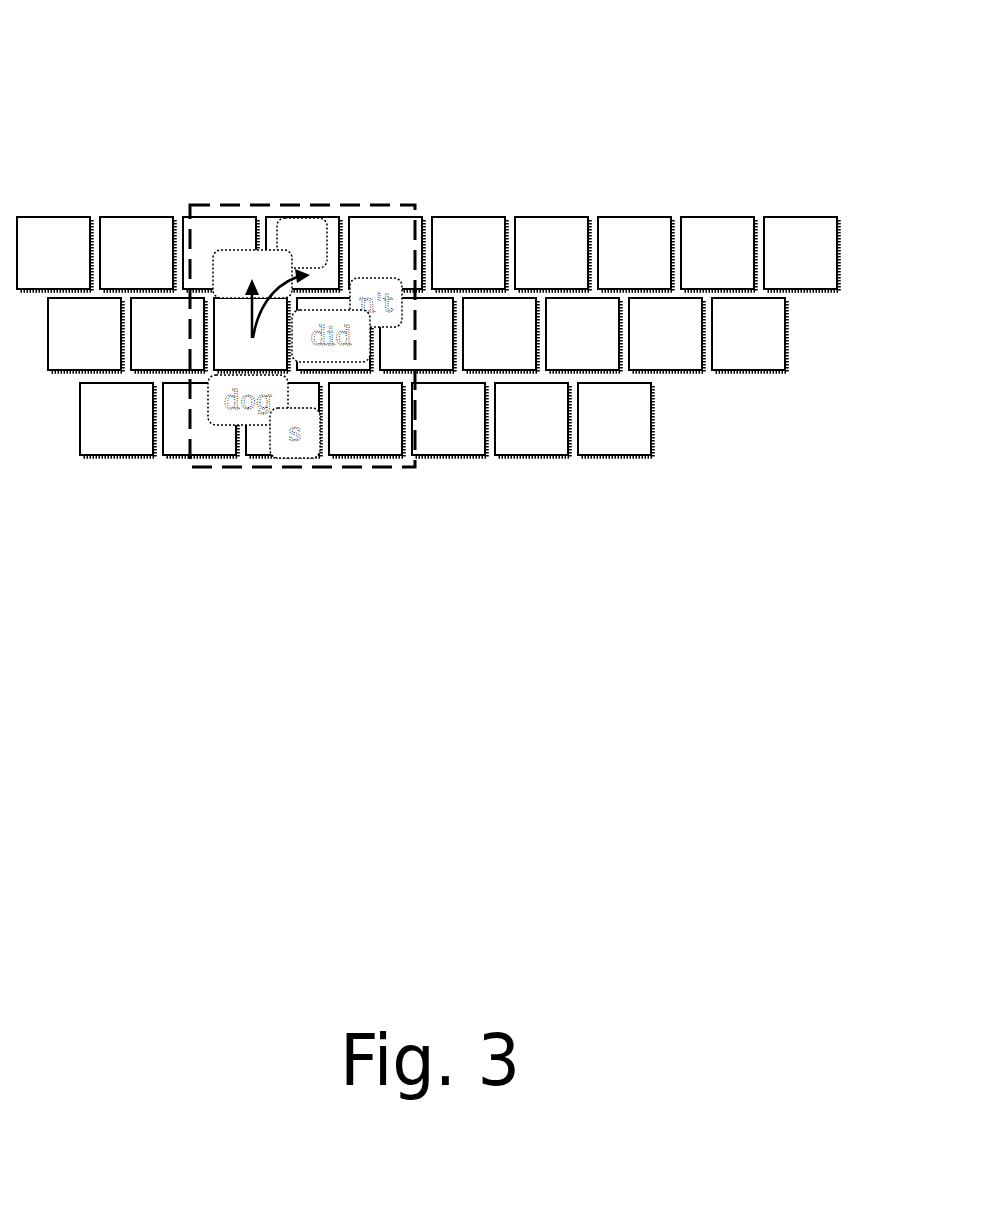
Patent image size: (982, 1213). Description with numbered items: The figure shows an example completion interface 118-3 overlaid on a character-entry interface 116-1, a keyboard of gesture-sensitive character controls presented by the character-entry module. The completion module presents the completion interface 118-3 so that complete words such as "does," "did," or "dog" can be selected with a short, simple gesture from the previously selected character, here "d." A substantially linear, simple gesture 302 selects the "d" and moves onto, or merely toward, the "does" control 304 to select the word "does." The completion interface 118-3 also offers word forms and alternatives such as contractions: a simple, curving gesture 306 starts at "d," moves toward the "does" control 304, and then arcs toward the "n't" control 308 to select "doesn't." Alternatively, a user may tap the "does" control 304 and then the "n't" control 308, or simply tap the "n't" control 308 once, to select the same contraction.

The character-entry interface 116-1 is at (740, 187).
The completion interface 118-3 is at (213, 205).
The substantially linear simple gesture 302 is at (262, 293).
The "does" control 304 is at (213, 252).
The curving gesture 306 is at (285, 272).
The "n't" control 308 is at (300, 218).